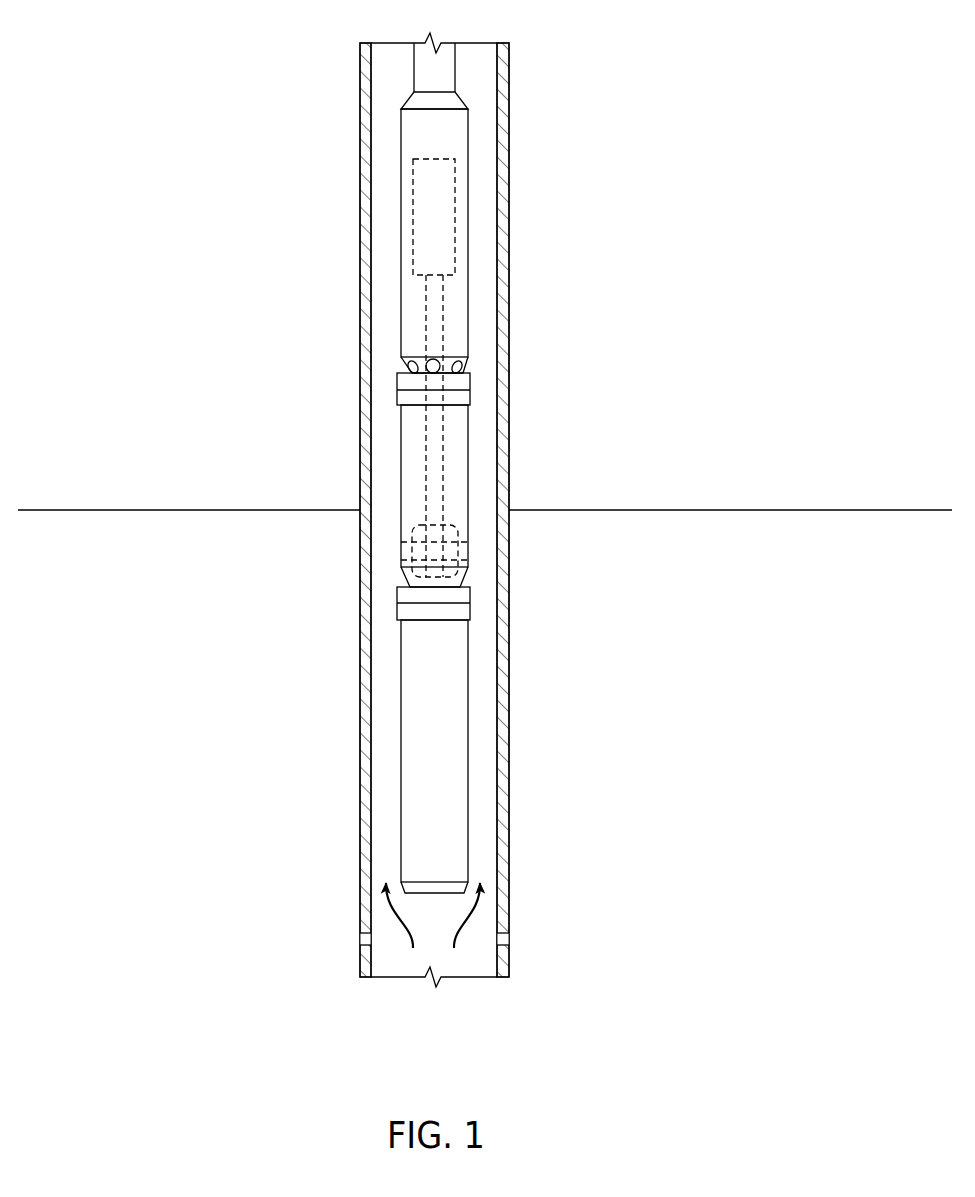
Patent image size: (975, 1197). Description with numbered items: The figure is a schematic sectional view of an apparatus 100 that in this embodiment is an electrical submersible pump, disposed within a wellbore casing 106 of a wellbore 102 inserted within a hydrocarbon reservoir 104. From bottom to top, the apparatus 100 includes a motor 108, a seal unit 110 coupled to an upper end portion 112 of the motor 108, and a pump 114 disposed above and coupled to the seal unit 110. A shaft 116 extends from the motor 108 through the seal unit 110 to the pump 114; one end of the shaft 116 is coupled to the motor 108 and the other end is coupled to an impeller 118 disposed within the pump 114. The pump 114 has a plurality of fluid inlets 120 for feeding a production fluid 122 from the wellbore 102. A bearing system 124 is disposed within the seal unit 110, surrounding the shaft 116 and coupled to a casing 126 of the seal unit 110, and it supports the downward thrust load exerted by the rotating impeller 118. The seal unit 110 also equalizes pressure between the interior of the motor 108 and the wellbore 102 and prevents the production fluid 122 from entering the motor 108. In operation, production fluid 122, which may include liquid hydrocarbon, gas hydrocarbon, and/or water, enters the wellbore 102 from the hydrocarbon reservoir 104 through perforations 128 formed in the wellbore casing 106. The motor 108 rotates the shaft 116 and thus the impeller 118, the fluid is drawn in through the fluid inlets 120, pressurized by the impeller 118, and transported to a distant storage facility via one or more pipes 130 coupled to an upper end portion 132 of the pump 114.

The apparatus 100 is at (395, 62).
The wellbore 102 is at (473, 952).
The hydrocarbon reservoir 104 is at (745, 789).
The wellbore casing 106 is at (510, 652).
The motor 108 is at (411, 729).
The seal unit 110 is at (472, 452).
The upper end portion 112 is at (467, 583).
The pump 114 is at (470, 133).
The shaft 116 is at (424, 469).
The impeller 118 is at (413, 221).
The fluid inlets 120 is at (410, 366).
The production fluid 122 is at (393, 913).
The bearing system 124 is at (409, 550).
The casing of the seal unit 126 is at (470, 422).
The perforations 128 is at (507, 940).
The pipes 130 is at (423, 76).
The upper end portion 132 is at (462, 101).